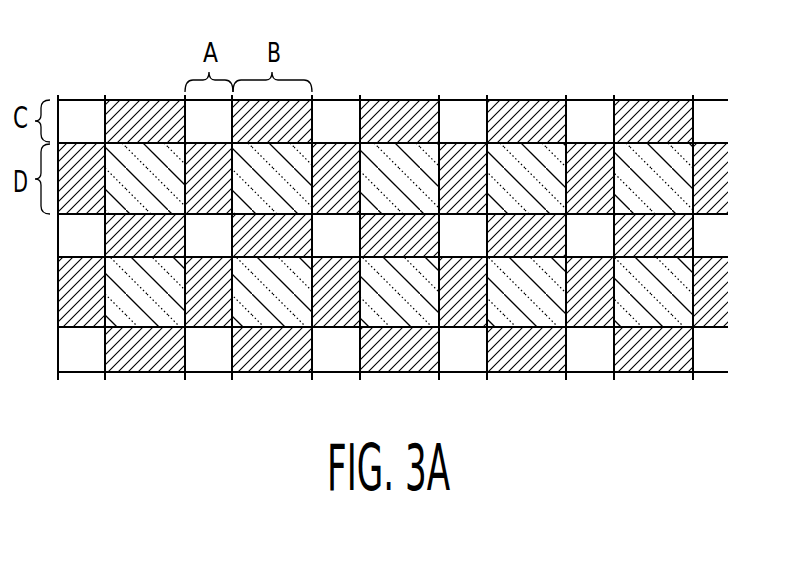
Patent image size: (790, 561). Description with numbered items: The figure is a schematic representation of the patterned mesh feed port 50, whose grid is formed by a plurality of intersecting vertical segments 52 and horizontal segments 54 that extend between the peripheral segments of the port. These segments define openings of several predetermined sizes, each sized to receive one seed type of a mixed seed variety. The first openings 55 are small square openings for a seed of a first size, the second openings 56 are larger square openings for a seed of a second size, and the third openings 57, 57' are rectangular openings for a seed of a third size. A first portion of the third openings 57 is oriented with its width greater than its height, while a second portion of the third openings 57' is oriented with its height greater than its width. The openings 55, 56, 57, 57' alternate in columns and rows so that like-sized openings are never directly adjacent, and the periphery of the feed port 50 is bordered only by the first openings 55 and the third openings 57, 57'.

The mesh feed port 50 is at (449, 64).
The vertical segments 52 is at (107, 302).
The horizontal segments 54 is at (82, 98).
The first openings 55 is at (222, 132).
The second openings 56 is at (287, 195).
The third openings 57 is at (272, 121).
The third openings 57' is at (208, 178).